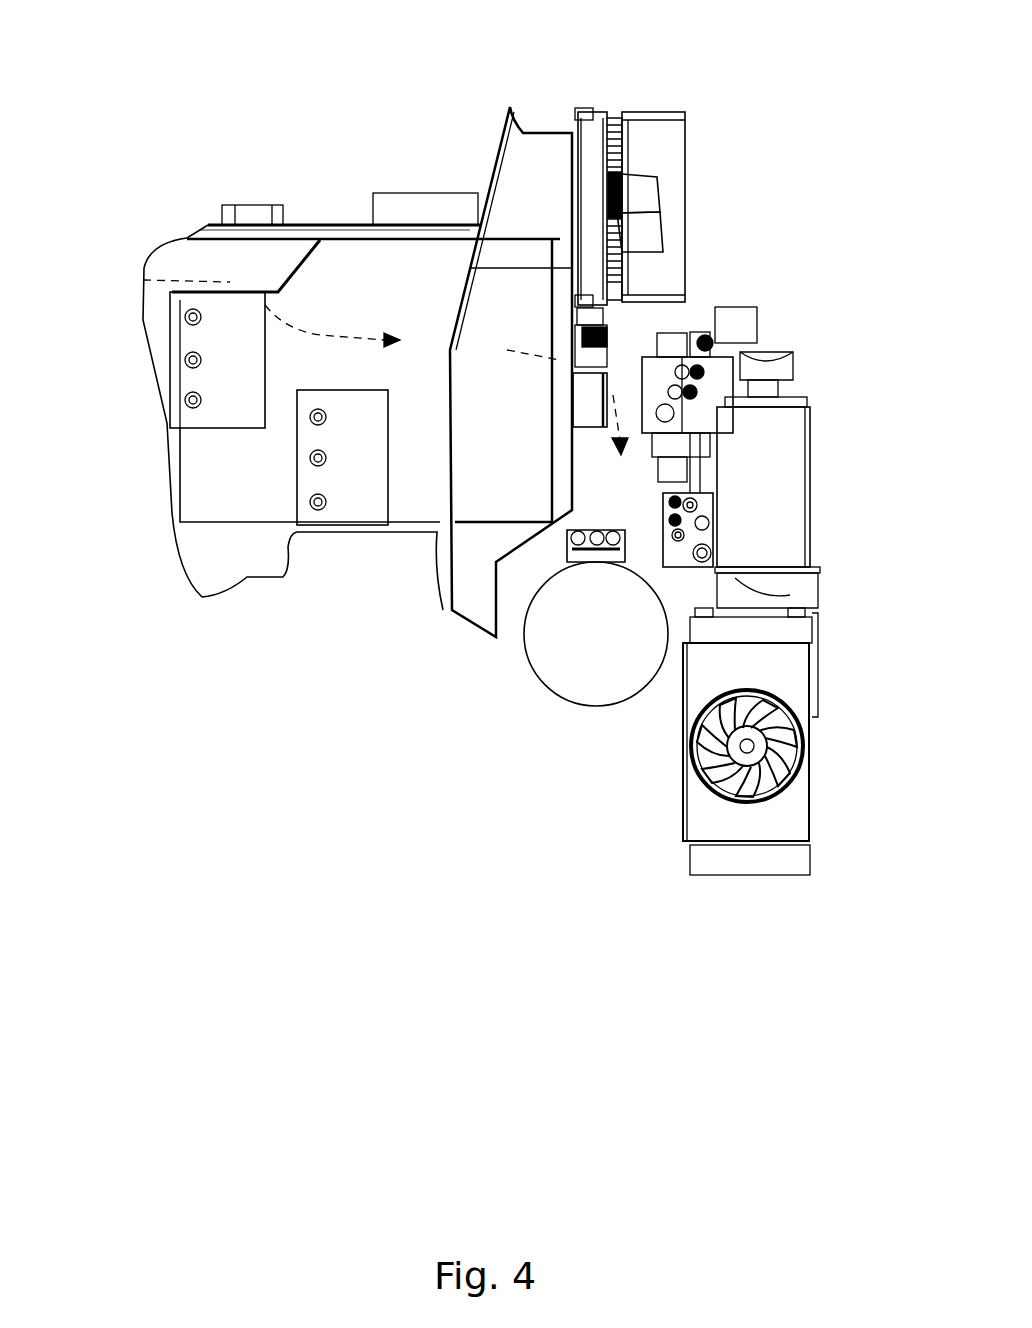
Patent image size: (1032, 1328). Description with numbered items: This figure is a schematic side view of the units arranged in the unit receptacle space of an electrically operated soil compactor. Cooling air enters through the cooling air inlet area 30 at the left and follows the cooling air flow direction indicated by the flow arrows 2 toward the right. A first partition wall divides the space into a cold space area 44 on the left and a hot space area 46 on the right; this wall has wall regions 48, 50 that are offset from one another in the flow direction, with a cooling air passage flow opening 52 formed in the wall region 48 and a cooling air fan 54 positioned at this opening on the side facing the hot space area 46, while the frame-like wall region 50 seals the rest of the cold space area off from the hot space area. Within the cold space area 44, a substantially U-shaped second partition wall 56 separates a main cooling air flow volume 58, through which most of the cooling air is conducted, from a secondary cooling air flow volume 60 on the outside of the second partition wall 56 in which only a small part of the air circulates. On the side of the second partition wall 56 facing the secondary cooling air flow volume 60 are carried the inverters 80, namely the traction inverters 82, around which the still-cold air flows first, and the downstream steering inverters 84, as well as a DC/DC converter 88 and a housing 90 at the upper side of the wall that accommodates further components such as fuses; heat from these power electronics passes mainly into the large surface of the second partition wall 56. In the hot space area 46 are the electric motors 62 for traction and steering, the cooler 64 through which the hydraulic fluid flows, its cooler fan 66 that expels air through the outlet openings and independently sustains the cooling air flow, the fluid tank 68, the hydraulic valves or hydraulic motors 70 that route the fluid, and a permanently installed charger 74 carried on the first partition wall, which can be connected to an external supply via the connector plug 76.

The air flow 2 is at (290, 305).
The cooling air inlet area 30 is at (140, 427).
The cold space area 44 is at (372, 125).
The hot space area 46 is at (764, 171).
The wall region 48 is at (572, 190).
The wall region 50 is at (443, 610).
The cooling air passage flow opening 52 is at (570, 397).
The cooling air fan 54 is at (640, 340).
The second partition wall 56 is at (203, 226).
The main cooling air flow volume 58 is at (155, 318).
The secondary cooling air flow volume 60 is at (242, 500).
The electric motors 62 is at (595, 706).
The cooler 64 is at (795, 800).
The cooler fan 66 is at (720, 803).
The fluid tank 68 is at (783, 490).
The hydraulic valves or hydraulic motors 70 is at (717, 452).
The charger 74 is at (695, 145).
The connector plug 76 is at (662, 216).
The inverters 80 is at (196, 452).
The traction inverters 82 is at (185, 333).
The steering inverters 84 is at (352, 500).
The DC/DC converter 88 is at (250, 205).
The housing 90 is at (398, 195).